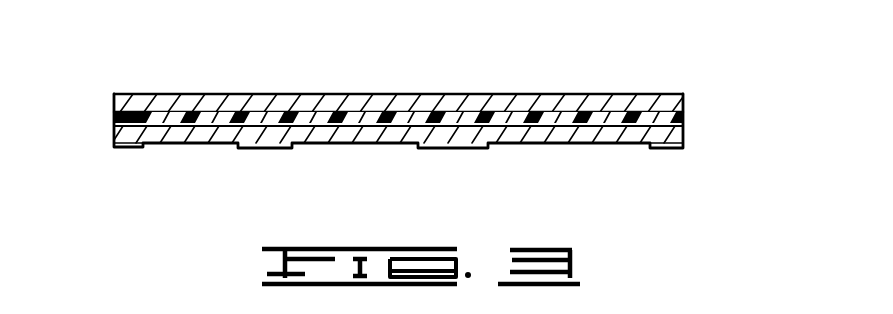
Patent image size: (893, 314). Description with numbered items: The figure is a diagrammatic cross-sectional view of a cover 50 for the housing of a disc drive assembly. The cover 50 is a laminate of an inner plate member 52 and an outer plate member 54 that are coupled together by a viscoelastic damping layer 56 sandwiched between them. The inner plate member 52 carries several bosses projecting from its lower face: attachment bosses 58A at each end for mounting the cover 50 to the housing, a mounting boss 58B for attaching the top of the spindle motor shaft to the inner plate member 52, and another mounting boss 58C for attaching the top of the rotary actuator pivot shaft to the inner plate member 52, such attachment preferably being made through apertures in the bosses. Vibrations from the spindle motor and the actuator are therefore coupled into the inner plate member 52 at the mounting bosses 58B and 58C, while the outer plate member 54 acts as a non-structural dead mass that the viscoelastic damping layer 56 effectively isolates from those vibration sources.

The cover 50 is at (399, 106).
The inner plate member 52 is at (347, 145).
The outer plate member 54 is at (272, 93).
The viscoelastic damping layer 56 is at (683, 120).
The attachment bosses 58A is at (128, 148).
The mounting boss 58B is at (473, 148).
The mounting boss 58C is at (250, 148).